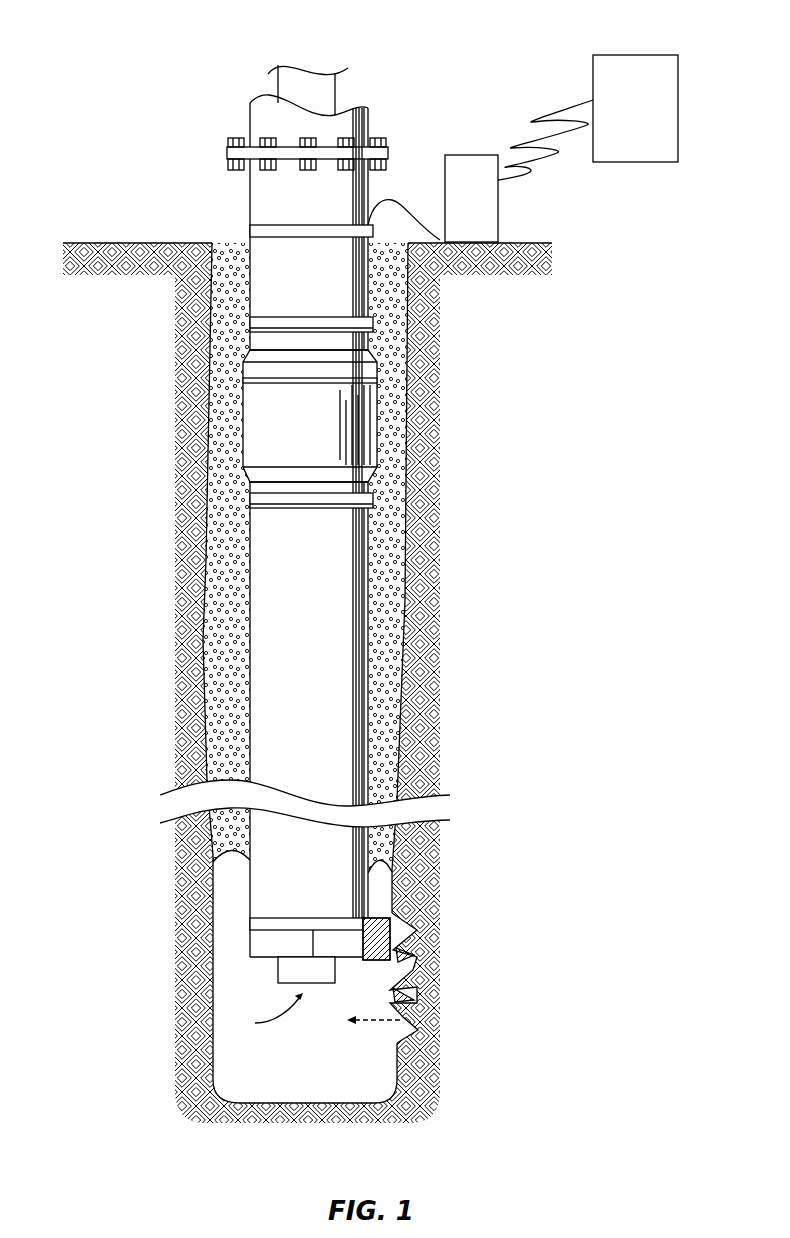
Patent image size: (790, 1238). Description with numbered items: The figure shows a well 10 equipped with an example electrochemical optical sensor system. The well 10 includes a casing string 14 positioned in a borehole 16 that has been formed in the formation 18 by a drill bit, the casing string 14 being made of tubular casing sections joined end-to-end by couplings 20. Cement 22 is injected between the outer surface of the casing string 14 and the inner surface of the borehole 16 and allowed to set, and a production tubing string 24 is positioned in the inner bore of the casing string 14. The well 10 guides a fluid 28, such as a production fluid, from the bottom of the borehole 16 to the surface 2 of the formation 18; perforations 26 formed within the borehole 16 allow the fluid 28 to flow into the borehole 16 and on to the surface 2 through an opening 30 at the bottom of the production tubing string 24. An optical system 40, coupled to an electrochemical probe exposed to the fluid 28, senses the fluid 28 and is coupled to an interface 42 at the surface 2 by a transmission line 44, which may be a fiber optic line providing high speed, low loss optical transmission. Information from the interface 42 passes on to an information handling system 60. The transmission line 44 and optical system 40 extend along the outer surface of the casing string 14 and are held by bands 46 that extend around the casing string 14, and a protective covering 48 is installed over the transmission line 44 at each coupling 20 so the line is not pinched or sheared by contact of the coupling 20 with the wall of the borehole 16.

The well 10 is at (369, 574).
The surface 2 is at (135, 238).
The casing string 14 is at (250, 207).
The borehole 16 is at (235, 250).
The formation 18 is at (201, 275).
The coupling 20 is at (327, 444).
The cement 22 is at (385, 635).
The production tubing string 24 is at (335, 96).
The perforations 26 is at (427, 928).
The fluid 28 is at (375, 1025).
The opening 30 is at (262, 1016).
The optical system 40 is at (390, 931).
The interface 42 is at (498, 210).
The transmission line 44 is at (405, 196).
The bands 46 is at (283, 226).
The protective covering 48 is at (380, 402).
The information handling system 60 is at (650, 122).